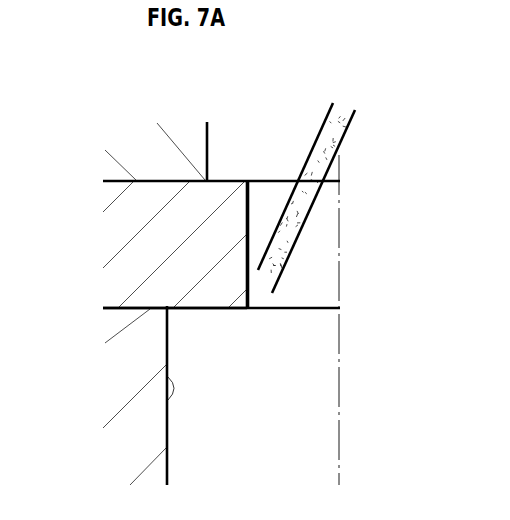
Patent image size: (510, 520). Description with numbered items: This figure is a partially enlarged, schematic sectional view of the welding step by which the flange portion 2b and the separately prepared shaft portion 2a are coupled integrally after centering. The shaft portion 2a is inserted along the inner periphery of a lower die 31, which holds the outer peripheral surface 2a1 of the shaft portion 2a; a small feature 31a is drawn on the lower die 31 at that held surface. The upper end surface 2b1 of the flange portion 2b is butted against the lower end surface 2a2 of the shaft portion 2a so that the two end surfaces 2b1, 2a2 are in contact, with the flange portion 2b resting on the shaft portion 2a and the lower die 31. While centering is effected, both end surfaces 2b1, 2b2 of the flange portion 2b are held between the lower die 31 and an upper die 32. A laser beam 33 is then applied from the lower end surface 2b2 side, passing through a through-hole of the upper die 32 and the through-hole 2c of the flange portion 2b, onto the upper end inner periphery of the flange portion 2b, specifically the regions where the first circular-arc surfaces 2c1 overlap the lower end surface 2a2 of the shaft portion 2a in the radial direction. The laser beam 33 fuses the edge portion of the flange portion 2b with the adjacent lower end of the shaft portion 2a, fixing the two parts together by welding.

The shaft portion 2a is at (307, 419).
The outer peripheral surface of the shaft portion 2a1 is at (167, 437).
The lower end surface of the shaft portion 2a2 is at (308, 307).
The flange portion 2b is at (117, 244).
The upper end surface of the flange portion 2b1 is at (148, 313).
The lower end surface of the flange portion 2b2 is at (122, 181).
The through-hole of the flange portion 2c is at (317, 244).
The first circular-arc surfaces 2c1 is at (250, 217).
The lower die 31 is at (130, 418).
The fillet of lower cut portion 31a is at (165, 369).
The upper die 32 is at (130, 149).
The laser beam 33 is at (322, 128).